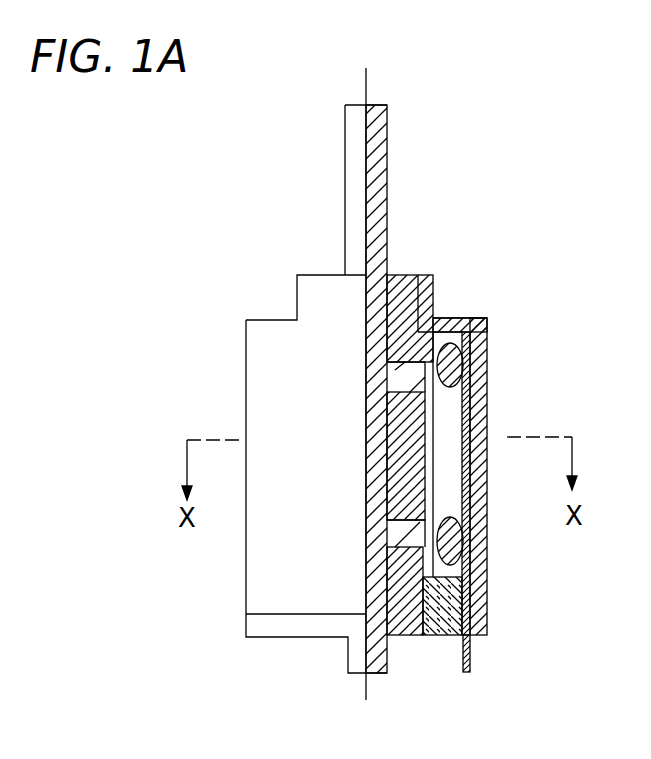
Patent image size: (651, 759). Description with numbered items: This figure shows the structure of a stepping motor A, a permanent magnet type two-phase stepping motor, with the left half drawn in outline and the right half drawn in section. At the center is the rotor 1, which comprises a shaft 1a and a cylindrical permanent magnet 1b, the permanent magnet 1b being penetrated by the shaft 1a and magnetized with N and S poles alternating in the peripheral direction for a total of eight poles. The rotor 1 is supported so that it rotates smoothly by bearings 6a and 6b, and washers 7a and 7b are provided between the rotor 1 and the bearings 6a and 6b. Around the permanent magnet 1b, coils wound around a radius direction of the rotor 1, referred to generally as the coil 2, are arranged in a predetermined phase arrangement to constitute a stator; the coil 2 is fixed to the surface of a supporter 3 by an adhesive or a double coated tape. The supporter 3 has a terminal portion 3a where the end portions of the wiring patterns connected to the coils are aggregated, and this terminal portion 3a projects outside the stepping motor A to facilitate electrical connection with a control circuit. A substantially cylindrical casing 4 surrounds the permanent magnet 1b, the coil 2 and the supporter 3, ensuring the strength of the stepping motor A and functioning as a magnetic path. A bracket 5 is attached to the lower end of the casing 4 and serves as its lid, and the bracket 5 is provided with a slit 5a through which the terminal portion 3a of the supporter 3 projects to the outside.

The rotor 1 is at (388, 84).
The stepping motor A is at (513, 158).
The shaft 1a is at (382, 133).
The permanent magnet 1b is at (387, 445).
The coil 2 is at (455, 408).
The supporter 3 is at (475, 510).
The terminal portion 3a is at (473, 653).
The casing 4 is at (476, 466).
The bracket 5 is at (437, 637).
The slit 5a is at (456, 646).
The bearing 6a is at (400, 275).
The bearing 6b is at (402, 637).
The washer 7a is at (440, 350).
The washer 7b is at (413, 533).